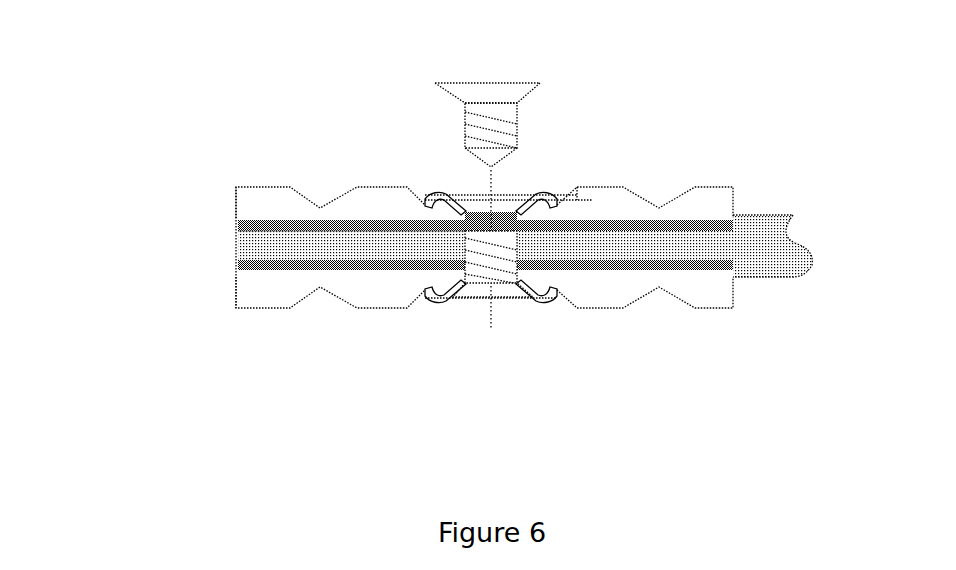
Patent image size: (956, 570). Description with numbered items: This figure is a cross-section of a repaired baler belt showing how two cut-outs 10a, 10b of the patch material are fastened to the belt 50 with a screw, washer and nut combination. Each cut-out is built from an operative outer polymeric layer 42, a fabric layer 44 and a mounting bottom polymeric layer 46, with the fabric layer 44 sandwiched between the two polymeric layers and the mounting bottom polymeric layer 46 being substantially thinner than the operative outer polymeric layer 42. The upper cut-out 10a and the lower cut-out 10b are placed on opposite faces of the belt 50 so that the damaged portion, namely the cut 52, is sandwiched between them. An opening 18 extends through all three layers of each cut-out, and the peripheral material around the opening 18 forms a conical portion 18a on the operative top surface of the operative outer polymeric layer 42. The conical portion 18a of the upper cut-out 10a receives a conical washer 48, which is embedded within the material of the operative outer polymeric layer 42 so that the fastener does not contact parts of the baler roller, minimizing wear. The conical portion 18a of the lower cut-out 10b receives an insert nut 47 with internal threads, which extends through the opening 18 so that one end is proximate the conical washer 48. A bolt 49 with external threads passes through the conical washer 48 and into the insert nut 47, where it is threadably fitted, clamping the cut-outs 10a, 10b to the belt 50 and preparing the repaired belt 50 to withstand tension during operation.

The cut-out of the patch material 10a is at (733, 188).
The cut-out of the patch material 10b is at (733, 287).
The opening 18 is at (477, 207).
The conical portion 18a is at (578, 198).
The operative outer polymeric layer 42 is at (238, 206).
The fabric layer 44 is at (237, 226).
The mounting bottom polymeric layer 46 is at (237, 229).
The insert nut 47 is at (547, 300).
The conical washer 48 is at (538, 197).
The bolt 49 is at (493, 90).
The belt 50 is at (760, 255).
The cut 52 is at (299, 233).